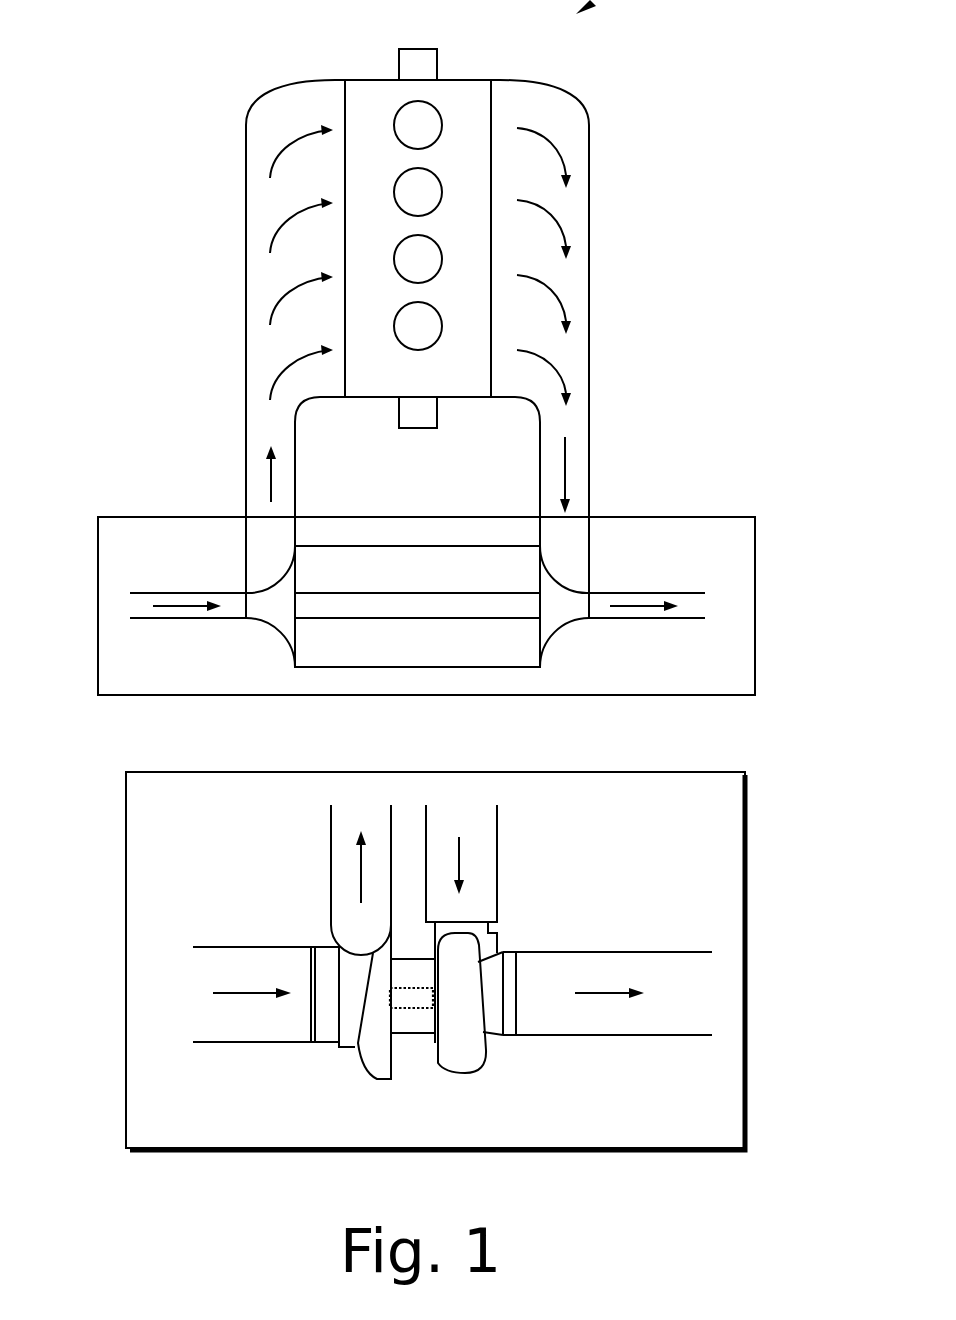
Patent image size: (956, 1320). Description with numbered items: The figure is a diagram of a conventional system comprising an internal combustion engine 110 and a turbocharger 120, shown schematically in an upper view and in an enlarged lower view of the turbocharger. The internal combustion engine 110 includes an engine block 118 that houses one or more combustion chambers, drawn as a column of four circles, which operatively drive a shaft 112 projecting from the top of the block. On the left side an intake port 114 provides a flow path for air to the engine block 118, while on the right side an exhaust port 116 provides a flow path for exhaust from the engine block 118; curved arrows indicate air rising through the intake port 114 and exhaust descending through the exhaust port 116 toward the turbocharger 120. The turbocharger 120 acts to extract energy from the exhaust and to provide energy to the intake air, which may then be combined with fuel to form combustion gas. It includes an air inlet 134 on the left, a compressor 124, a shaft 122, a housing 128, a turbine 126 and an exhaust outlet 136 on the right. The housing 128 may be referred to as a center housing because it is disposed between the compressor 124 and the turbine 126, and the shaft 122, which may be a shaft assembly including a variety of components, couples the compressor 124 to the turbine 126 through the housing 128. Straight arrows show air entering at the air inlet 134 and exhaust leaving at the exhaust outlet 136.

The internal combustion engine 110 is at (380, 80).
The shaft 112 is at (418, 49).
The intake port 114 is at (267, 98).
The exhaust port 116 is at (584, 112).
The engine block 118 is at (402, 389).
The turbocharger 120 is at (648, 516).
The shaft 122 is at (418, 620).
The compressor 124 is at (275, 630).
The turbine 126 is at (563, 626).
The housing 128 is at (407, 581).
The air inlet 134 is at (208, 592).
The exhaust outlet 136 is at (650, 593).